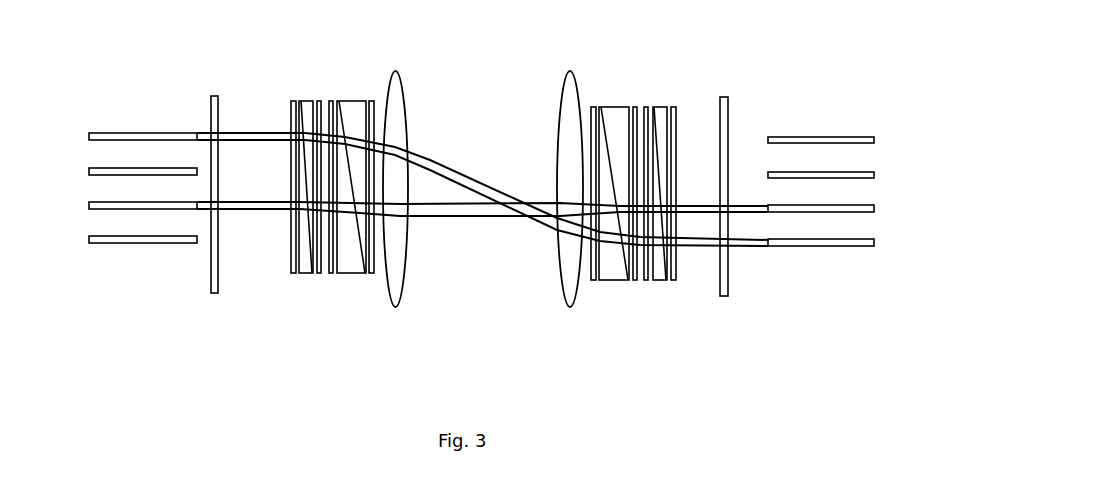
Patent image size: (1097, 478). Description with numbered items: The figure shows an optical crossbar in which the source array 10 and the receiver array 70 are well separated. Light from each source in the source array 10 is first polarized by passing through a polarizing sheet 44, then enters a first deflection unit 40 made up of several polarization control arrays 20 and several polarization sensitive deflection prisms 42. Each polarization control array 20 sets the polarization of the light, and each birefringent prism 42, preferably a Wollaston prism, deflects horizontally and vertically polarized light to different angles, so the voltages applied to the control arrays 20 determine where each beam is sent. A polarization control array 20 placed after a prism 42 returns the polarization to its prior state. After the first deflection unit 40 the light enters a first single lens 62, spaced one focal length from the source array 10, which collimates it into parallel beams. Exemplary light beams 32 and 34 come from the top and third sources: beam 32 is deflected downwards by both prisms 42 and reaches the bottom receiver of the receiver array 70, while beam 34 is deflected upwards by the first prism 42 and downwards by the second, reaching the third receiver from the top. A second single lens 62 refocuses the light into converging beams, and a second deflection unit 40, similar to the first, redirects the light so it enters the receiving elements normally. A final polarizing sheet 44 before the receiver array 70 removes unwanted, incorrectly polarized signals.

The source array 10 is at (143, 212).
The polarization control array 20 is at (293, 100).
The light beam 32 is at (424, 157).
The light beam 34 is at (430, 219).
The deflection unit 40 is at (483, 208).
The polarization sensitive deflection prism 42 is at (306, 274).
The polarizing sheet 44 is at (467, 221).
The single lens 62 is at (483, 211).
The receiver array 70 is at (821, 221).